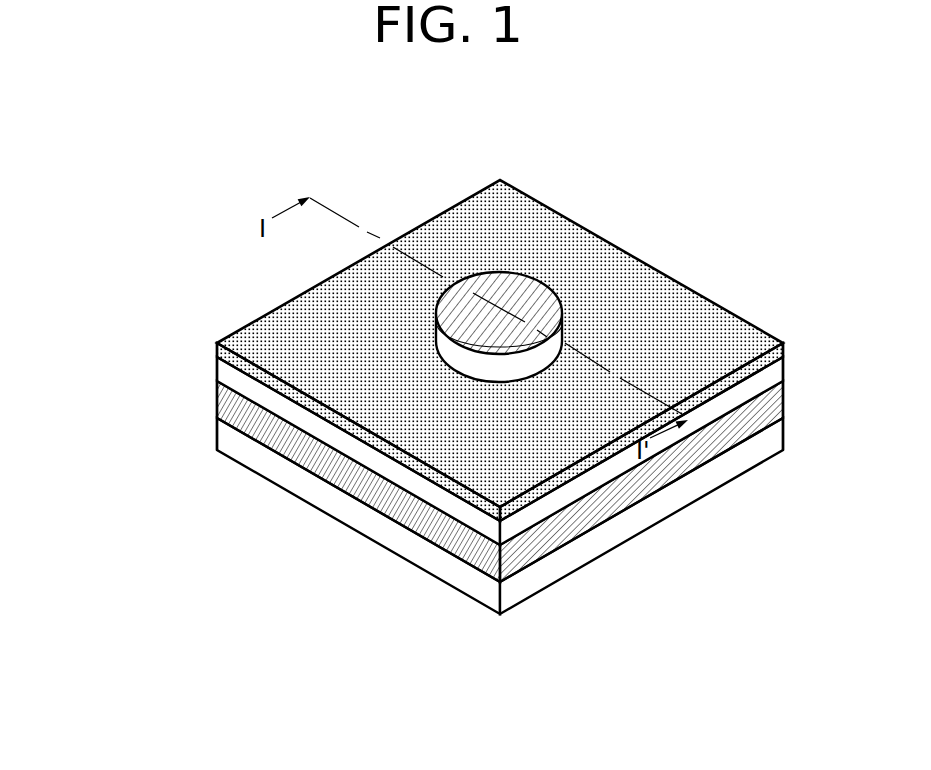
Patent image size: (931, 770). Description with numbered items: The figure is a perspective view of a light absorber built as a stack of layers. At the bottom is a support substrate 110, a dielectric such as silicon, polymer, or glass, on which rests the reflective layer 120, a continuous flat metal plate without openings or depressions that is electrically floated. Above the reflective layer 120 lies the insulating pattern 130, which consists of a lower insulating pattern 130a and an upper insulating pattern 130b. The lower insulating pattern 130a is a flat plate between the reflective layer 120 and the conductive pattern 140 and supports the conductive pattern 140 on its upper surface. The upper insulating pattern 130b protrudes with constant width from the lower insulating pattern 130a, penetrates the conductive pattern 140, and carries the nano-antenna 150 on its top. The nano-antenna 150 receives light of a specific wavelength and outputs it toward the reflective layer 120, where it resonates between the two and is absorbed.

The support substrate 110 is at (225, 437).
The reflective layer 120 is at (225, 402).
The insulating pattern 130 is at (114, 299).
The lower insulating pattern 130a is at (225, 372).
The upper insulating pattern 130b is at (450, 356).
The conductive pattern 140 is at (666, 298).
The nano-antenna 150 is at (535, 290).